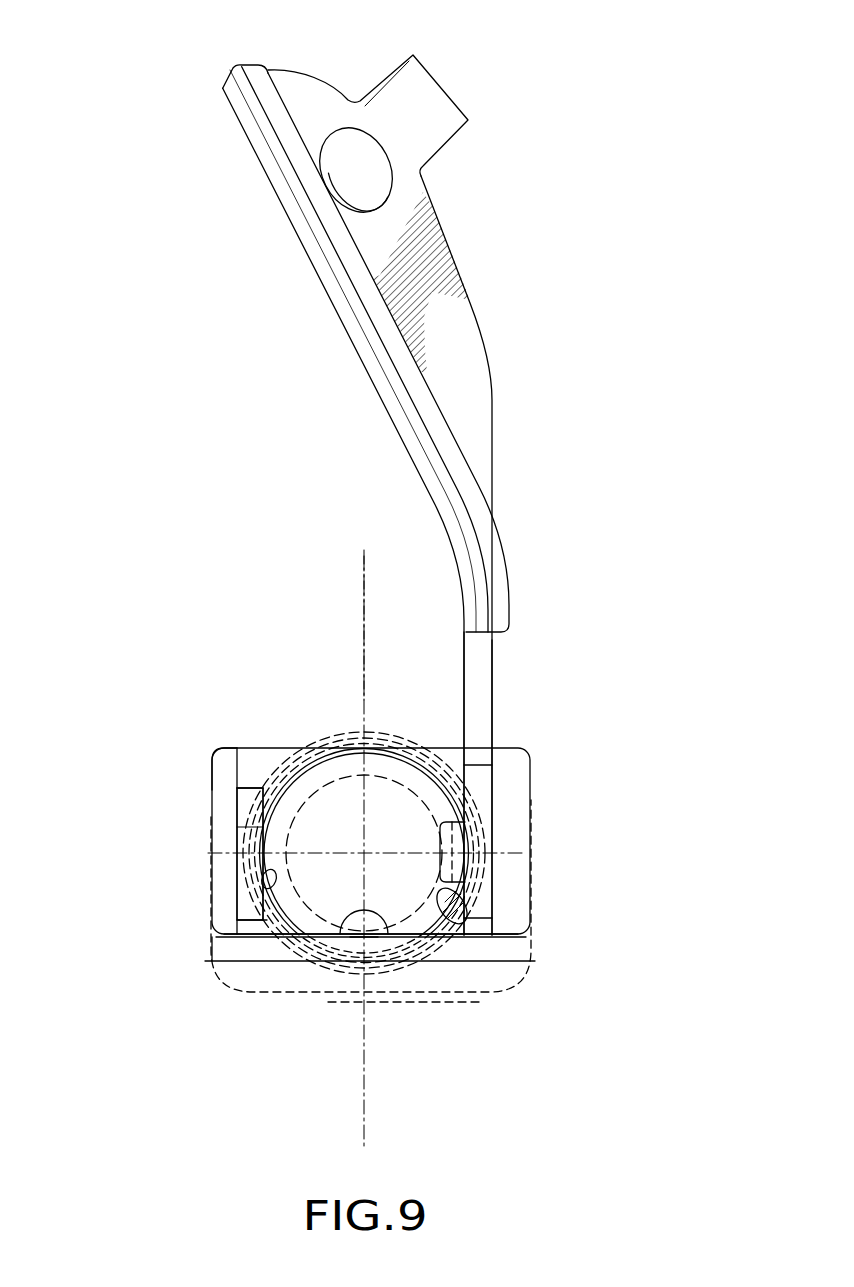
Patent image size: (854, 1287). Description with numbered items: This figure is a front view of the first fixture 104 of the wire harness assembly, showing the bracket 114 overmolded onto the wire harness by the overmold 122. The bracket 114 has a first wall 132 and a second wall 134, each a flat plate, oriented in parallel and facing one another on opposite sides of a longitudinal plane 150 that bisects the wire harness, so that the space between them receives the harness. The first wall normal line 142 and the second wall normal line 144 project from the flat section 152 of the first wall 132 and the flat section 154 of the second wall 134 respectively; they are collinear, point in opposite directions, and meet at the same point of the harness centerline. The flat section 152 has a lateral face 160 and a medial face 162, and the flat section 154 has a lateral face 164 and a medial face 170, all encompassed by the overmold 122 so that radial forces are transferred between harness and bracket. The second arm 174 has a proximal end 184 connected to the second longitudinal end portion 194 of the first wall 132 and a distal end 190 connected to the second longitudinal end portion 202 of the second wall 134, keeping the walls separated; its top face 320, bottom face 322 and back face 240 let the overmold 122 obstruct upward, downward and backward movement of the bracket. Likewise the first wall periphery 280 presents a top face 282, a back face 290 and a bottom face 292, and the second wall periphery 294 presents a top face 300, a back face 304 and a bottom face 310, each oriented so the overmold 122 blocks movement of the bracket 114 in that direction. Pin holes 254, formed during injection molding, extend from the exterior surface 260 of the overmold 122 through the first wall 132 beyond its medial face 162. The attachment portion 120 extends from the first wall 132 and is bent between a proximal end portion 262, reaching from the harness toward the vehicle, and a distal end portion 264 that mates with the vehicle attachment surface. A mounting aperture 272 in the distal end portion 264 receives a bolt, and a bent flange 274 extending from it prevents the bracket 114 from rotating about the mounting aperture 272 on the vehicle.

The first fixture 104 is at (266, 391).
The bracket 114 is at (465, 527).
The attachment portion 120 is at (447, 353).
The distal end portion 264 is at (393, 228).
The mounting aperture 272 is at (356, 168).
The flange 274 is at (420, 103).
The longitudinal plane 150 is at (364, 632).
The first wall normal line 142 is at (351, 851).
The second wall normal line 144 is at (351, 851).
The second longitudinal end portion 194 is at (480, 845).
The second arm 174 is at (365, 951).
The overmold 122 is at (530, 802).
The proximal end portion 262 is at (476, 703).
The top face 282 is at (477, 792).
The first wall 132 is at (507, 790).
The flat section 152 is at (495, 825).
The pin holes 254 is at (500, 882).
The first wall periphery 280 is at (487, 902).
The back face 290 is at (490, 893).
The bottom face 292 is at (465, 918).
The lateral face 160 is at (478, 918).
The medial face 162 is at (473, 942).
The proximal end 184 is at (447, 950).
The back face 240 is at (410, 948).
The top face 320 is at (338, 934).
The bottom face 322 is at (377, 963).
The distal end 190 is at (273, 953).
The bottom face 310 is at (216, 945).
The back face 304 is at (215, 920).
The medial face 170 is at (272, 885).
The lateral face 164 is at (238, 908).
The flat section 154 is at (248, 890).
The second wall 134 is at (247, 853).
The second wall periphery 294 is at (236, 827).
The second longitudinal end portion 202 is at (235, 805).
The top face 300 is at (250, 790).
The exterior surface 260 is at (210, 772).